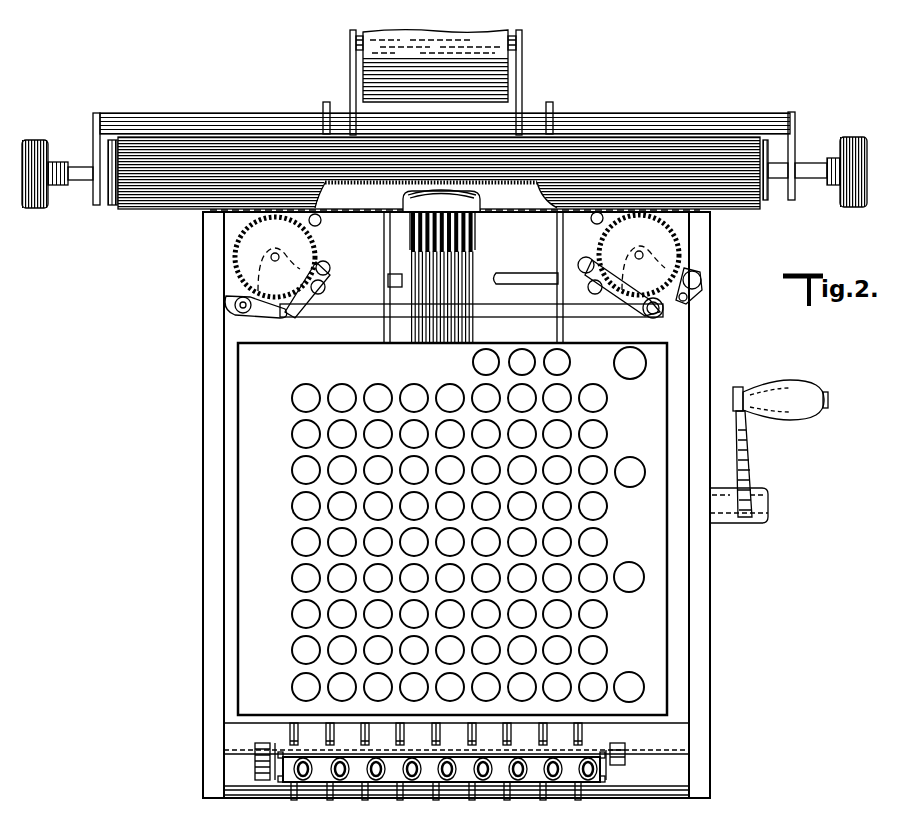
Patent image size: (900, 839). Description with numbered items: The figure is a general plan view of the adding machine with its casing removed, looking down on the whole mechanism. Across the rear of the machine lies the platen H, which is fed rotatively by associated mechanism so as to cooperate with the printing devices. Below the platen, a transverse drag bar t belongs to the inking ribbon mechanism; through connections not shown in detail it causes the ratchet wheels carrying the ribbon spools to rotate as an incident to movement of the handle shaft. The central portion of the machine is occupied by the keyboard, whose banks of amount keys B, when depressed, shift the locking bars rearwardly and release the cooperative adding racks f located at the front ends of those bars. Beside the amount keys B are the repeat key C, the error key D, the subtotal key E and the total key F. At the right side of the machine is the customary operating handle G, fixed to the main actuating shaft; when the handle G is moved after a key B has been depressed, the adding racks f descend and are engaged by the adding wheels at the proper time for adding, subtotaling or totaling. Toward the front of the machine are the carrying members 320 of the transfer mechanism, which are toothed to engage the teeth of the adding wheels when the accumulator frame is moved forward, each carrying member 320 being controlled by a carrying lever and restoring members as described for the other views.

The platen H is at (688, 152).
The drag bar t is at (536, 308).
The amount keys B is at (280, 649).
The repeat key C is at (637, 353).
The error key D is at (633, 462).
The subtotal key E is at (630, 566).
The total key F is at (629, 671).
The operating handle G is at (746, 472).
The adding rack f is at (505, 745).
The carrying member 320 is at (282, 795).